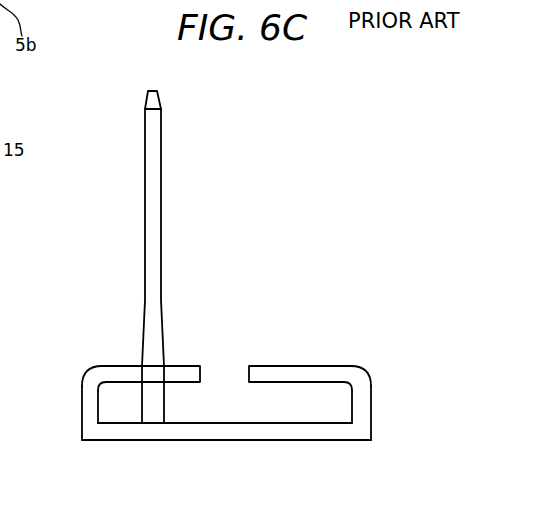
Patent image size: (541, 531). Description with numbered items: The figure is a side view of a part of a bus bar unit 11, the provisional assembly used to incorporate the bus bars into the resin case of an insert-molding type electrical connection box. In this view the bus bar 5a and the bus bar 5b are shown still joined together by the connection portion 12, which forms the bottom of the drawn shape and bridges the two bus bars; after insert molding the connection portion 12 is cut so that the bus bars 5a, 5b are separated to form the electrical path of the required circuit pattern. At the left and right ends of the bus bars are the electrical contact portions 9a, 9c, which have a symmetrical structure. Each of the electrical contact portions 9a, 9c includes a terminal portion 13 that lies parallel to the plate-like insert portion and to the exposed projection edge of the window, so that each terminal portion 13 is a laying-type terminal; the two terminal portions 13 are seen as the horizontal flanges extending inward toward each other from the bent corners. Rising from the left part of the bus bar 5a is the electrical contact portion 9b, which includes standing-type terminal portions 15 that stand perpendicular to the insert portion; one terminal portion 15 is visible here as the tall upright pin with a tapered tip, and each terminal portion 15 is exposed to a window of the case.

The bus bar unit 11 is at (289, 150).
The bus bar 5a is at (68, 398).
The bus bar 5b is at (384, 398).
The electrical contact portion 9a is at (124, 357).
The electrical contact portion 9b is at (126, 95).
The electrical contact portion 9c is at (349, 357).
The connection portion 12 is at (178, 440).
The terminal portion 13 is at (184, 366).
The terminal portion 15 is at (162, 158).